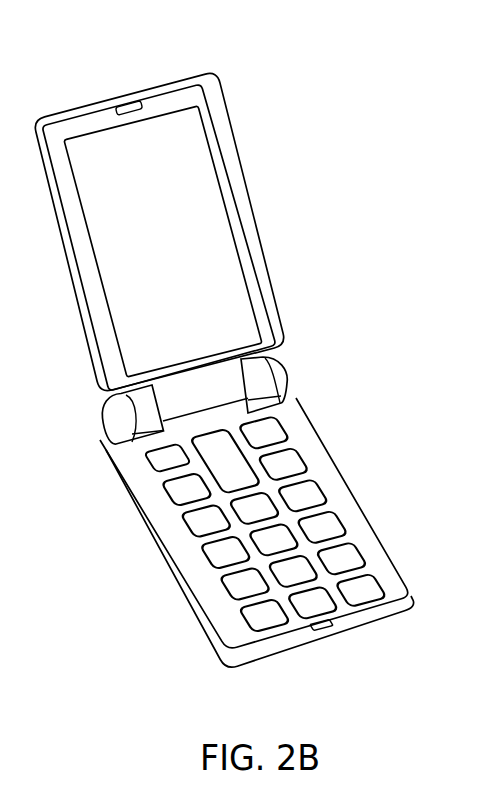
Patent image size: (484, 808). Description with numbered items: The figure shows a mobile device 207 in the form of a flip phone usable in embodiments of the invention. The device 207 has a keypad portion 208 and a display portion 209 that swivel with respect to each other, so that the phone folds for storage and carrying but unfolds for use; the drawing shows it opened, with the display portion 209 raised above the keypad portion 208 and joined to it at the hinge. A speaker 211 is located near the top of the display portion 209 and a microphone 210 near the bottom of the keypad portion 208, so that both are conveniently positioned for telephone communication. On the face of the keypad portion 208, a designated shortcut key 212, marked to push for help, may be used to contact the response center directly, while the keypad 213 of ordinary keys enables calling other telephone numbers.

The mobile device 207 is at (224, 369).
The keypad portion 208 is at (309, 447).
The display portion 209 is at (194, 230).
The microphone 210 is at (323, 629).
The speaker 211 is at (129, 105).
The designated shortcut key 212 is at (150, 460).
The keypad 213 is at (170, 545).